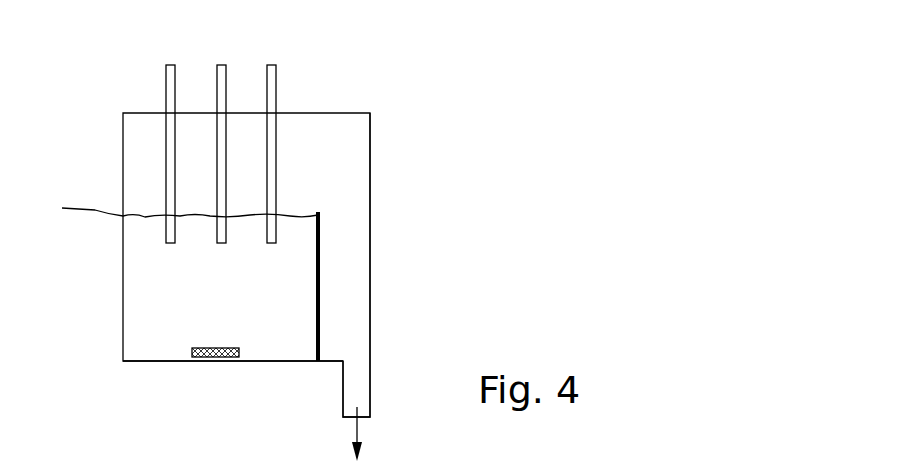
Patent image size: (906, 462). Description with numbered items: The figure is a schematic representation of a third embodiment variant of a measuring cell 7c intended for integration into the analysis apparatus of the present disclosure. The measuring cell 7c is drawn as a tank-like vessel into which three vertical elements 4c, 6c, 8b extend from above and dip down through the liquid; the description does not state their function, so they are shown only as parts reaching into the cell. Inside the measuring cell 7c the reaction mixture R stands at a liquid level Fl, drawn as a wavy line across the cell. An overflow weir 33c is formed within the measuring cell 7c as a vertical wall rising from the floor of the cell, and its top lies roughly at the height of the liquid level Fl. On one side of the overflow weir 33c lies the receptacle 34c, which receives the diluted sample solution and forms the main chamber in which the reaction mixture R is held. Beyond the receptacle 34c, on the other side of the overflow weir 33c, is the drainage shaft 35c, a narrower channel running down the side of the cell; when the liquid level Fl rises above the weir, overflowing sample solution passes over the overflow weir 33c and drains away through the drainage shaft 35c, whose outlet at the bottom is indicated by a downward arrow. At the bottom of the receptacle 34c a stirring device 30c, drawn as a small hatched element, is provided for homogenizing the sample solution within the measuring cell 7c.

The electrode rod 4c is at (166, 83).
The electrode rod 6c is at (217, 83).
The electrode rod 8b is at (267, 83).
The measuring cell 7c is at (376, 141).
The liquid level Fl is at (176, 210).
The reaction mixture R is at (150, 257).
The overflow weir 33c is at (320, 232).
The receptacle 34c is at (150, 327).
The drainage shaft 35c is at (337, 299).
The stirring device 30c is at (215, 357).